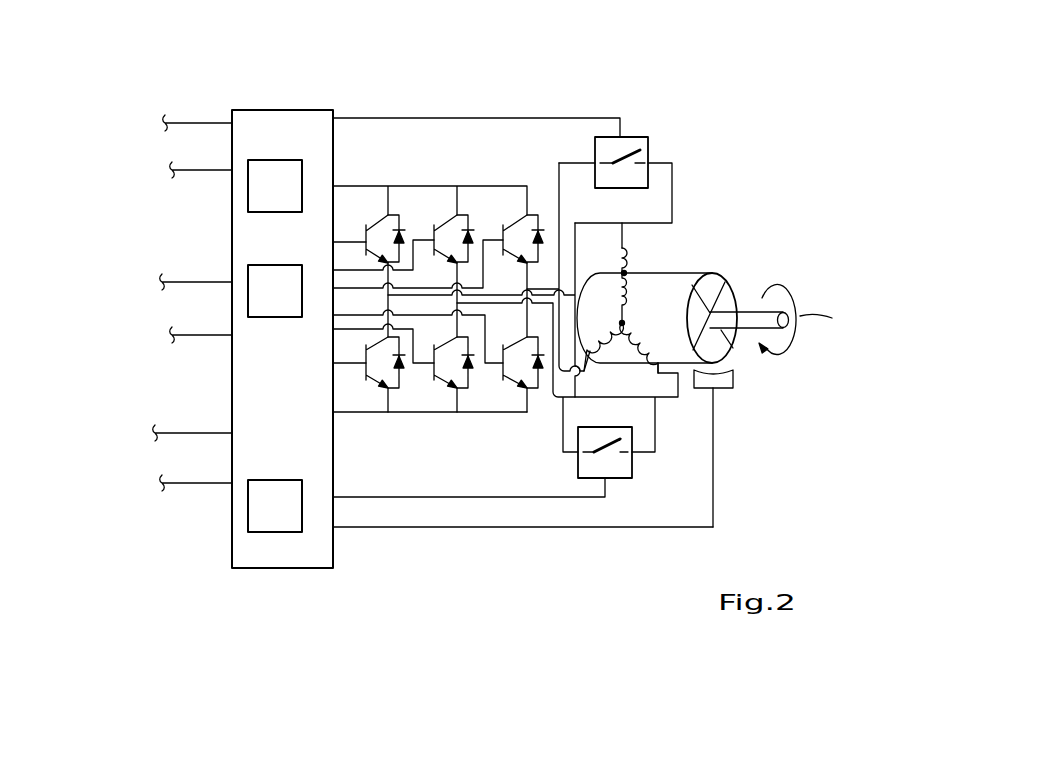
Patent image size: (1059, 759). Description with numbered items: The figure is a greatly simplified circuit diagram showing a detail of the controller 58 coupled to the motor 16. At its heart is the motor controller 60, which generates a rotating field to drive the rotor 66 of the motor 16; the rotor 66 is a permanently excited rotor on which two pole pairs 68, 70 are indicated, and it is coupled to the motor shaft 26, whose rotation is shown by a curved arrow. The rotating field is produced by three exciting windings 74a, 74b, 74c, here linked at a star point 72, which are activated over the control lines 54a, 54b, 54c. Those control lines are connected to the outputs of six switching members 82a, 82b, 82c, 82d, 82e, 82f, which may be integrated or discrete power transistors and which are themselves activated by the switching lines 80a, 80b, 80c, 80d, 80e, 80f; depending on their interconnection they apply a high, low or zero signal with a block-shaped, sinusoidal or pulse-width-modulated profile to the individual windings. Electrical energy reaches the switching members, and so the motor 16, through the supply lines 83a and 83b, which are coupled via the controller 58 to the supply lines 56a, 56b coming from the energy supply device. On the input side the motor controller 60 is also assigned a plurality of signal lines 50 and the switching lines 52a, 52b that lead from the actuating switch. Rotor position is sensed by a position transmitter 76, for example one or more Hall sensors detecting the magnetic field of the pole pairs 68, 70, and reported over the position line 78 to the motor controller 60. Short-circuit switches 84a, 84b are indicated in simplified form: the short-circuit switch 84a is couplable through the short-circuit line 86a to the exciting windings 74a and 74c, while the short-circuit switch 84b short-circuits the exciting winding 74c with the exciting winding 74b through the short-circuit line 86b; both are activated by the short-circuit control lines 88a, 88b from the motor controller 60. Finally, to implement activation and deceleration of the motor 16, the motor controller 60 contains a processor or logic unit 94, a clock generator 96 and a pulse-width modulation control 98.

The motor 16 is at (688, 237).
The motor shaft 26 is at (782, 306).
The signal lines 50 is at (200, 121).
The switching line 52a is at (193, 282).
The switching line 52b is at (195, 333).
The control line 54a is at (605, 222).
The control line 54b is at (548, 372).
The control line 54c is at (565, 398).
The supply line 56a is at (183, 430).
The supply line 56b is at (182, 483).
The controller 58 is at (184, 250).
The motor controller 60 is at (297, 133).
The rotor 66 is at (693, 270).
The pole pair 68 is at (728, 280).
The pole pair 70 is at (733, 350).
The star point 72 is at (624, 321).
The exciting winding 74a is at (628, 258).
The exciting winding 74b is at (660, 394).
The exciting winding 74c is at (592, 371).
The position transmitter 76 is at (734, 380).
The position line 78 is at (715, 520).
The switching line 80a is at (340, 240).
The switching line 80b is at (333, 269).
The switching line 80c is at (333, 287).
The switching line 80d is at (333, 316).
The switching line 80e is at (333, 330).
The switching line 80f is at (345, 364).
The switching member 82a is at (388, 222).
The switching member 82b is at (447, 217).
The switching member 82c is at (517, 217).
The switching member 82d is at (384, 390).
The switching member 82e is at (445, 382).
The switching member 82f is at (517, 382).
The supply line 83a is at (427, 186).
The supply line 83b is at (418, 413).
The short-circuit switch 84a is at (637, 135).
The short-circuit switch 84b is at (622, 479).
The short-circuit line 86a is at (572, 162).
The short-circuit line 86b is at (641, 465).
The short-circuit control line 88a is at (543, 118).
The short-circuit control line 88b is at (400, 497).
The logic unit 94 is at (272, 160).
The clock generator 96 is at (272, 277).
The pulse-width modulation control 98 is at (262, 526).